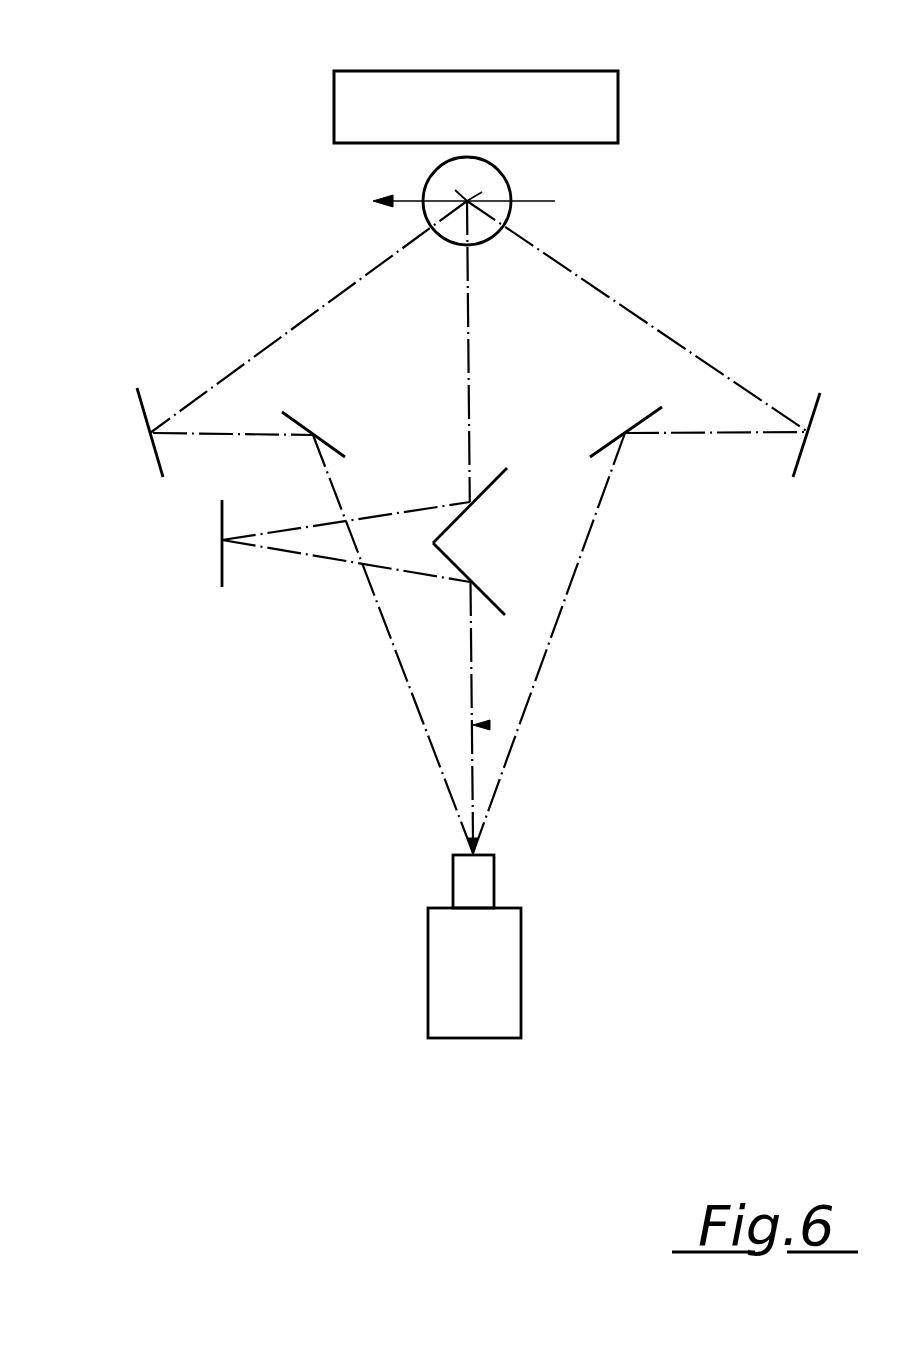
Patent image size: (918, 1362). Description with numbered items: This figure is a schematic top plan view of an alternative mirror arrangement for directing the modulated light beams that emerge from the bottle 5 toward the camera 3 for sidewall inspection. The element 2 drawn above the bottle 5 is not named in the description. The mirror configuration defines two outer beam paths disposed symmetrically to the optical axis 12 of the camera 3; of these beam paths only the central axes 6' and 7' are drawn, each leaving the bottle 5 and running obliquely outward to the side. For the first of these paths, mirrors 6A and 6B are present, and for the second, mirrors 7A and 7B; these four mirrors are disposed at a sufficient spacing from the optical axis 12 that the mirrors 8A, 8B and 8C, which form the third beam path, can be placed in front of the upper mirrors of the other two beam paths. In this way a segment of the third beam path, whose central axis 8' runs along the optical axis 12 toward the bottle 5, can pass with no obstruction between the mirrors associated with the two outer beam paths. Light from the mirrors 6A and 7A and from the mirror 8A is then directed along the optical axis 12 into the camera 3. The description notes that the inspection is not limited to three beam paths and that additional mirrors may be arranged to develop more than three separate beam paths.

The object / target surface 2 is at (463, 102).
The camera 3 is at (490, 1000).
The bottle 5 is at (500, 210).
The central axis of first beam path 6' is at (308, 317).
The central axis of second beam path 7' is at (637, 316).
The third light beam 8' is at (455, 528).
The mirror 6A is at (333, 445).
The mirror 6B is at (135, 400).
The mirror 7A is at (617, 430).
The mirror 7B is at (805, 447).
The mirror 8A is at (483, 587).
The mirror 8B is at (222, 517).
The mirror 8C is at (483, 502).
The optical axis 12 is at (488, 724).